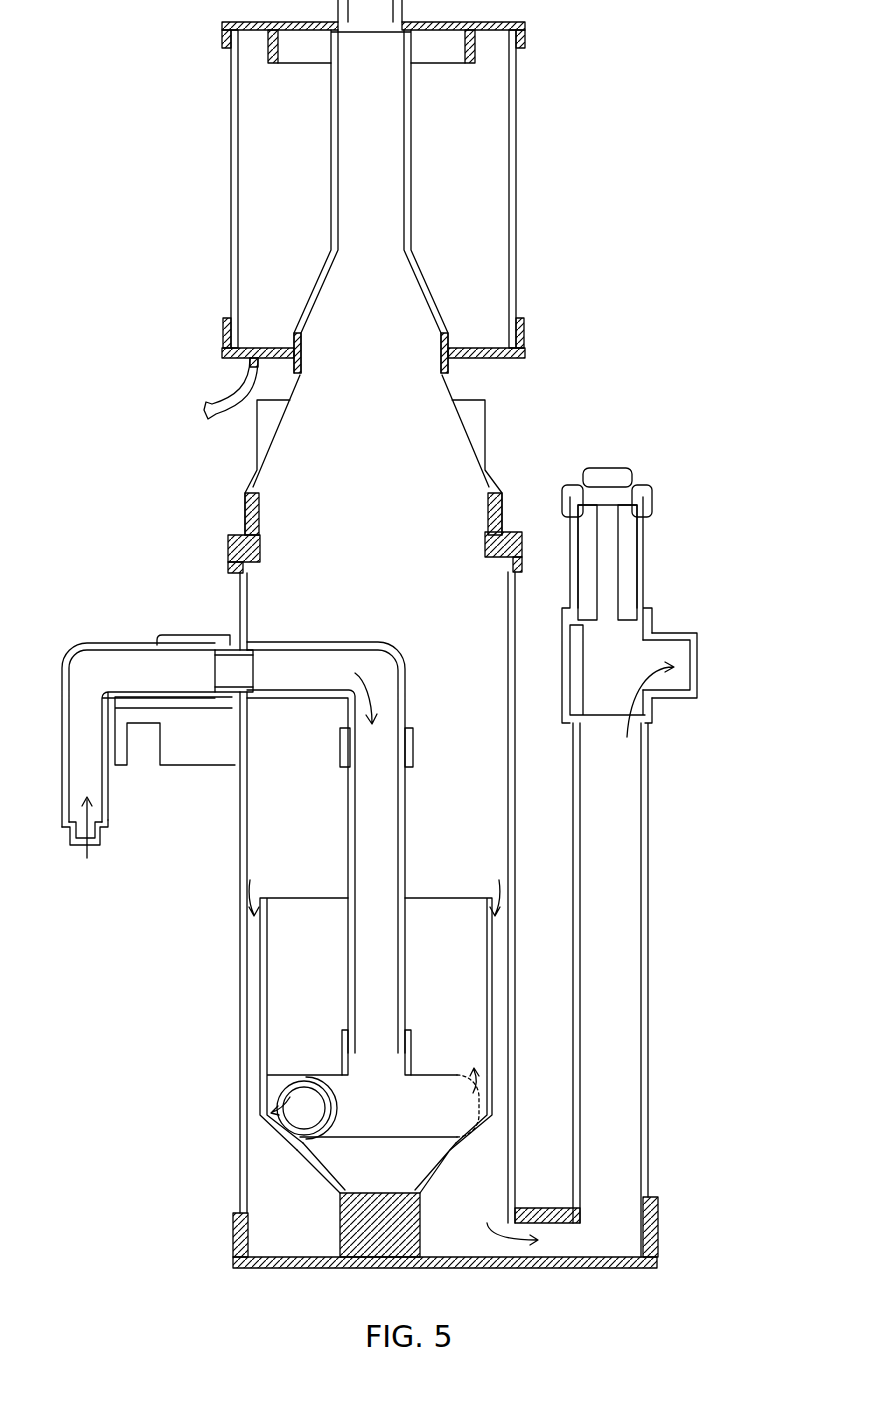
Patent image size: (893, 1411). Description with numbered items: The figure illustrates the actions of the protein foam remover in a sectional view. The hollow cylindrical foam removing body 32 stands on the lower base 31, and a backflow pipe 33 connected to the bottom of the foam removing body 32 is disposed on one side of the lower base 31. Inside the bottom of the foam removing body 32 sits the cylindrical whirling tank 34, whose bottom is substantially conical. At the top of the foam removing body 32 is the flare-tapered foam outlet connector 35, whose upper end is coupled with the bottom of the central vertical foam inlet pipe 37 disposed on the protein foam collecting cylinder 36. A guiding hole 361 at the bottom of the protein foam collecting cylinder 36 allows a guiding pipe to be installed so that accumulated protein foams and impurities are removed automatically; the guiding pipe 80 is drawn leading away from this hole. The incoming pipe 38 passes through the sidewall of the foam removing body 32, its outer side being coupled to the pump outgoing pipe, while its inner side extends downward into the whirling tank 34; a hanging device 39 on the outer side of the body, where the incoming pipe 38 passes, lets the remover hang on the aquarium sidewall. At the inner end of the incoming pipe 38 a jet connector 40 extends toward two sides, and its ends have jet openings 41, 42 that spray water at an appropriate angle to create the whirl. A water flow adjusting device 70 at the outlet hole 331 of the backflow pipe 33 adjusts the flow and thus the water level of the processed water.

The lower base 31 is at (658, 1230).
The foam removing body 32 is at (238, 598).
The backflow pipe 33 is at (627, 882).
The outlet hole 331 is at (688, 650).
The whirling tank 34 is at (270, 963).
The foam outlet connector 35 is at (448, 388).
The protein foam collecting cylinder 36 is at (503, 148).
The guiding hole 361 is at (257, 348).
The central vertical foam inlet pipe 37 is at (340, 133).
The incoming pipe 38 is at (108, 660).
The hanging device 39 is at (185, 750).
The jet connector 40 is at (300, 1167).
The jet opening 41 is at (303, 1108).
The jet opening 42 is at (477, 1093).
The water flow adjusting device 70 is at (615, 575).
The drain tube 80 is at (227, 393).